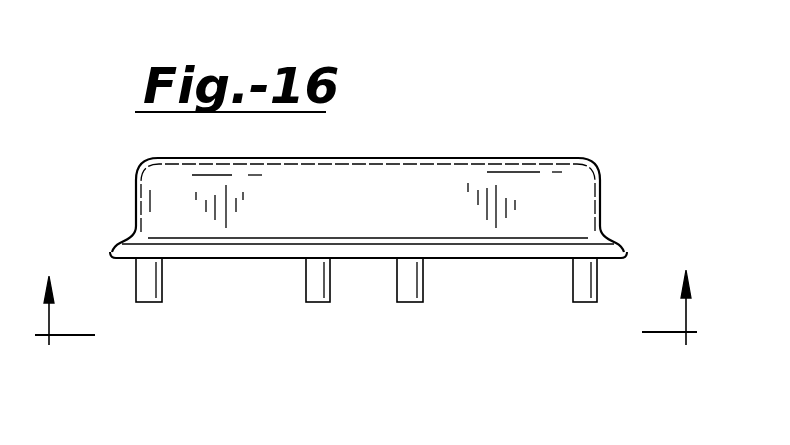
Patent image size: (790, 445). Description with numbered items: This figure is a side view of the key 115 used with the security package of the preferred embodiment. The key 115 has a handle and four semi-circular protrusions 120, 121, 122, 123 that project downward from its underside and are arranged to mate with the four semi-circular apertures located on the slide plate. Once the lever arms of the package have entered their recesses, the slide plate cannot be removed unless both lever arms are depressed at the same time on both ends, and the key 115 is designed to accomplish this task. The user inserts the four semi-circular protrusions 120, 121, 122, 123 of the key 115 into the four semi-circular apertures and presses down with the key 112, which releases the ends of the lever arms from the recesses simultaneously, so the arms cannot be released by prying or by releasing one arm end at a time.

The key 112 is at (375, 157).
The key 115 is at (532, 138).
The semi-circular protrusion 120 is at (147, 303).
The semi-circular protrusion 121 is at (317, 303).
The semi-circular protrusion 122 is at (413, 303).
The semi-circular protrusion 123 is at (583, 303).